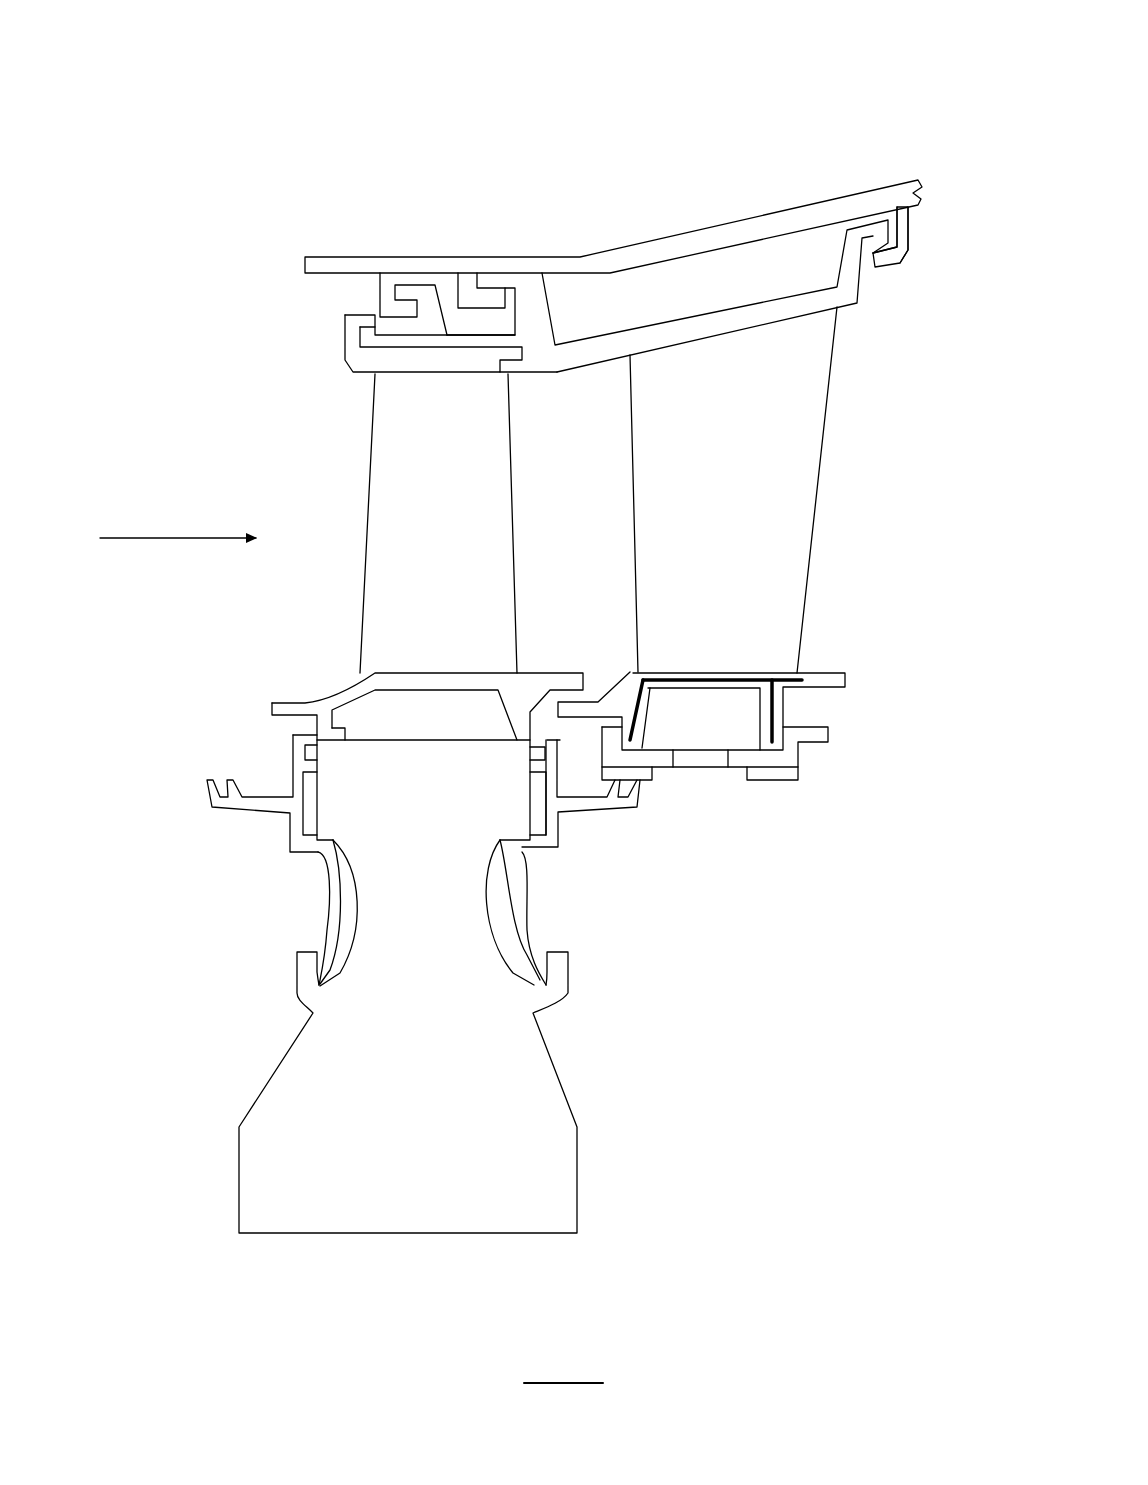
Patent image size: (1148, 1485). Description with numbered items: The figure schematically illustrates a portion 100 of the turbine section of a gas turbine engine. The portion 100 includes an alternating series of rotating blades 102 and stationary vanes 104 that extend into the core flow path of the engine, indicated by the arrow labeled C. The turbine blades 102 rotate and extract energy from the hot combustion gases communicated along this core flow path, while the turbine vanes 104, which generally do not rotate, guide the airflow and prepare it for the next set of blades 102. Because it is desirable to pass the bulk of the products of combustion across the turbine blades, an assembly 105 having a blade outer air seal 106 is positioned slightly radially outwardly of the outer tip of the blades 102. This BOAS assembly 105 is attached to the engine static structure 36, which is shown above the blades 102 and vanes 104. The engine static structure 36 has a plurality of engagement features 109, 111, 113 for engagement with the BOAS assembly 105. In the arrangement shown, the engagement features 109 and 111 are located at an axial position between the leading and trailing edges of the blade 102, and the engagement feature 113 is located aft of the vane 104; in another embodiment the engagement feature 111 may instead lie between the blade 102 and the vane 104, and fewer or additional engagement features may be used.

The portion of the turbine section 100 is at (820, 83).
The engine static structure 36 is at (614, 262).
The engagement feature 113 is at (905, 212).
The BOAS assembly 105 is at (326, 329).
The engagement feature 109 is at (387, 287).
The engagement feature 111 is at (468, 283).
The blade outer air seal 106 is at (363, 358).
The rotating blade 102 is at (395, 437).
The stationary vane 104 is at (655, 465).